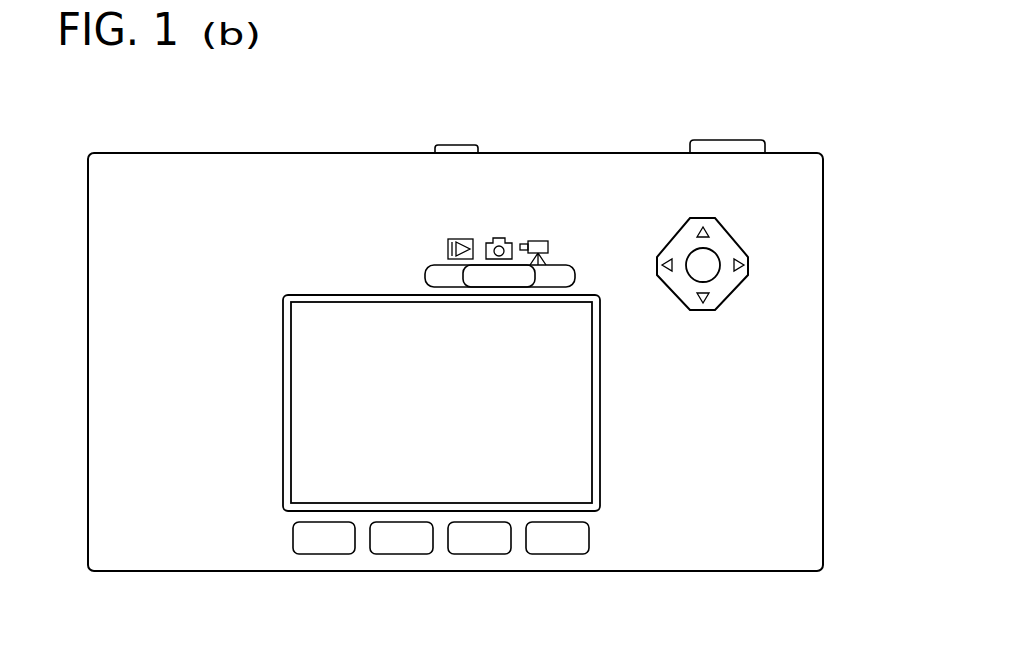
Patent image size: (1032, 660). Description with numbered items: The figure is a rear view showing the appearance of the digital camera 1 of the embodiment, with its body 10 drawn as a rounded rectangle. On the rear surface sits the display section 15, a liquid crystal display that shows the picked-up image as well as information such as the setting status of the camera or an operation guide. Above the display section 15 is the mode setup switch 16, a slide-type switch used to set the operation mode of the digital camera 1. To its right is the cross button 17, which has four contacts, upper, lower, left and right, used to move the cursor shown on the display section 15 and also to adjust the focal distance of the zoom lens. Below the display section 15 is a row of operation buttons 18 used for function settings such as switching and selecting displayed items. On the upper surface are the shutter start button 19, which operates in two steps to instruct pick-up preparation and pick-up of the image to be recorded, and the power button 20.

The digital camera 1 is at (800, 590).
The camera body 10 is at (702, 572).
The display section 15 is at (578, 402).
The mode setup switch 16 is at (533, 278).
The cross button 17 is at (722, 243).
The operation buttons 18 is at (402, 547).
The shutter start button 19 is at (732, 140).
The power button 20 is at (460, 145).